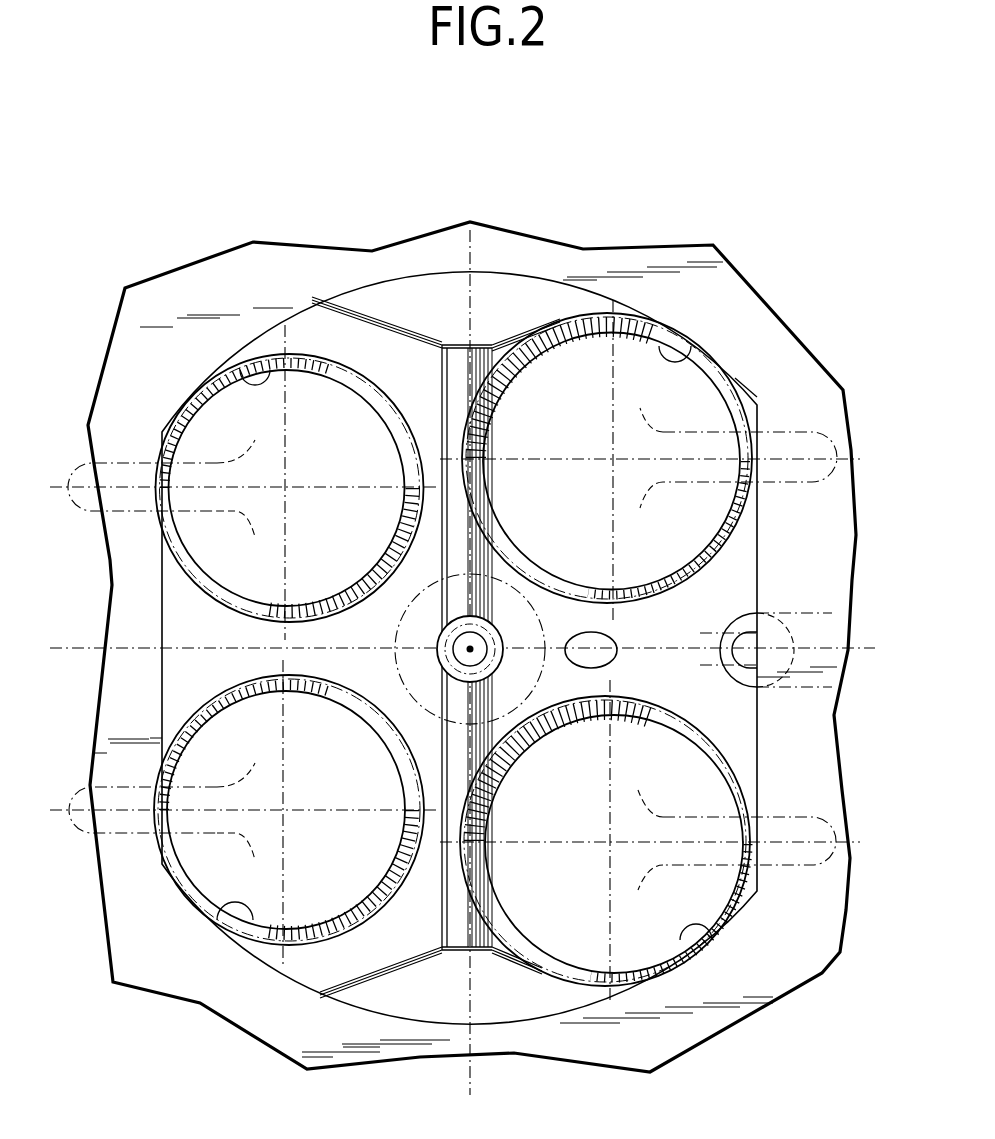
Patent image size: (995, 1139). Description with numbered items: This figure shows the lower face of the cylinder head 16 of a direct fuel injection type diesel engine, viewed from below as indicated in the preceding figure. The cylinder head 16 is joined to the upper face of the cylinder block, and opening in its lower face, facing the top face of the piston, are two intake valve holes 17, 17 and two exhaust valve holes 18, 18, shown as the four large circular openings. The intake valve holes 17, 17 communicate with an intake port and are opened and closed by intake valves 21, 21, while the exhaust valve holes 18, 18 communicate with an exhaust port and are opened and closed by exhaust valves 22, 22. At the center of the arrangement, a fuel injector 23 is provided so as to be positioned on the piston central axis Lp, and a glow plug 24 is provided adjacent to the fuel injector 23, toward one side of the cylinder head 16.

The cylinder head 16 is at (749, 275).
The intake valve hole 17 is at (691, 362).
The exhaust valve hole 18 is at (242, 382).
The intake valve 21 is at (718, 430).
The exhaust valve 22 is at (195, 463).
The fuel injector 23 is at (444, 663).
The glow plug 24 is at (800, 612).
The piston central axis Lp is at (471, 648).